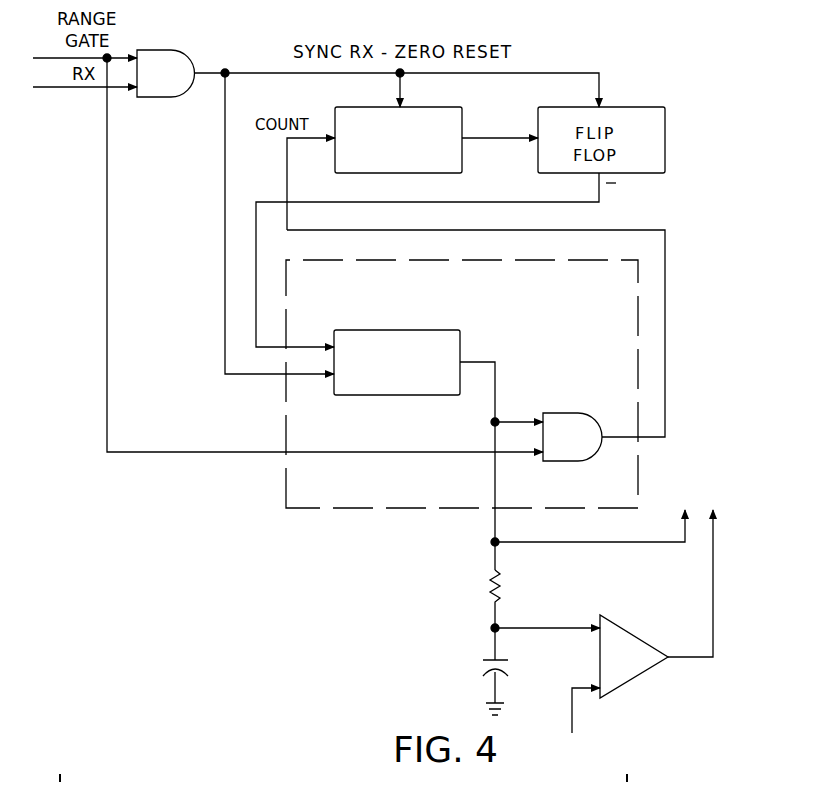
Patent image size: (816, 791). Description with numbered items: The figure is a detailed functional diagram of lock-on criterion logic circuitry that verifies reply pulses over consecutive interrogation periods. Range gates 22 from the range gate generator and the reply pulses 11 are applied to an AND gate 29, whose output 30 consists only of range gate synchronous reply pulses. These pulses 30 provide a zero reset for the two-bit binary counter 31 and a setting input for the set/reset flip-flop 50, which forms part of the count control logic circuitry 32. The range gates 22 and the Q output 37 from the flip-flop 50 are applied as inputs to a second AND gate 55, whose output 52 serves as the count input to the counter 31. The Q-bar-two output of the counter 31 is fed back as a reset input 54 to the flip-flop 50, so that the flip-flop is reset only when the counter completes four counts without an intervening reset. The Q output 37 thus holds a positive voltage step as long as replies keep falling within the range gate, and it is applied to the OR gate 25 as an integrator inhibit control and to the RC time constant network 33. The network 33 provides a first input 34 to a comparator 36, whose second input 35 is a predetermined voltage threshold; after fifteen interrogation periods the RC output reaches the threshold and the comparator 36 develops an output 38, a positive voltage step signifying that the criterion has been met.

The reply pulses 11 is at (58, 89).
The range gates 22 is at (63, 60).
The AND gate 29 is at (178, 97).
The range gate synchronous reply pulses 30 is at (245, 73).
The two-bit counter 31 is at (502, 130).
The reset input 54 is at (508, 202).
The output of AND gate 55 52 is at (665, 341).
The count control logic circuitry 32 is at (380, 508).
The set/reset flip-flop 50 is at (418, 395).
The Q output 37 is at (495, 380).
The AND gate 55 is at (592, 413).
The OR gate 25 is at (690, 488).
The RC time constant network 33 is at (491, 632).
The first input 34 is at (558, 628).
The comparator 36 is at (636, 634).
The second input 35 is at (572, 722).
The output of comparator 38 is at (713, 578).